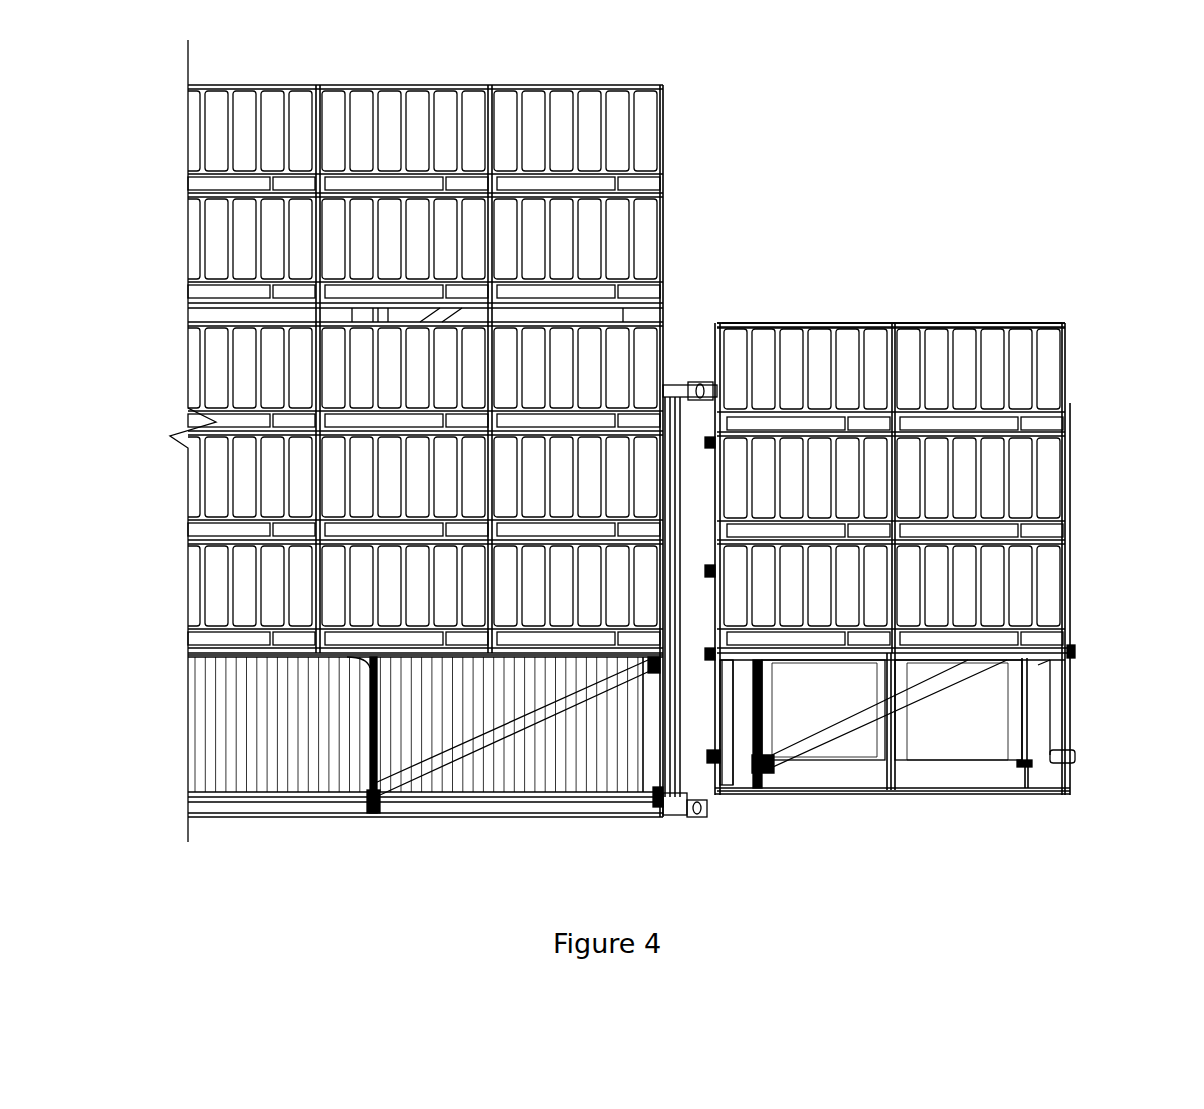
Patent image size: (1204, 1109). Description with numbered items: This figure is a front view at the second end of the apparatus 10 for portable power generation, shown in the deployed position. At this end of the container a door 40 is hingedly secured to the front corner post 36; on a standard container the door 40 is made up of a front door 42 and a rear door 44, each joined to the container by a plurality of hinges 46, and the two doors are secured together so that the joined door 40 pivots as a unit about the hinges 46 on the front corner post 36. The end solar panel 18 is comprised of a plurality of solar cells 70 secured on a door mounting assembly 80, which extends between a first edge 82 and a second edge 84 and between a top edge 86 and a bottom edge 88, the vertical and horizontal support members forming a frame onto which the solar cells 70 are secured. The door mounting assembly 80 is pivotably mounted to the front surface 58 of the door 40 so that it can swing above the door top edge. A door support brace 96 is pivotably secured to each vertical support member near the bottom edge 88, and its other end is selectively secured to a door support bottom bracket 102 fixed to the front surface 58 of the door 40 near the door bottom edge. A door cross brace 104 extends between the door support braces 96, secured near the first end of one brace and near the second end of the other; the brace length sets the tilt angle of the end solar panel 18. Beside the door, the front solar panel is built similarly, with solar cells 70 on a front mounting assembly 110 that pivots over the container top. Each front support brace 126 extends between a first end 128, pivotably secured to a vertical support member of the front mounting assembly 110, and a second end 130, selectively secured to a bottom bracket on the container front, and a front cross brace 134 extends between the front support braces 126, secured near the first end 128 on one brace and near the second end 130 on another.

The apparatus for portable power generation 10 is at (985, 133).
The end solar panel 18 is at (897, 325).
The front corner post 36 is at (693, 428).
The door 40 is at (953, 773).
The front door 42 is at (817, 772).
The rear door 44 is at (910, 773).
The hinges 46 is at (700, 652).
The front surface 58 is at (998, 738).
The solar cells 70 is at (626, 330).
The door mounting assembly 80 is at (1070, 640).
The first edge 82 is at (710, 350).
The second edge 84 is at (1074, 362).
The top edge 86 is at (1007, 322).
The bottom edge 88 is at (1041, 671).
The door support brace 96 is at (757, 728).
The door support bottom bracket 102 is at (772, 782).
The door cross brace 104 is at (885, 792).
The front mounting assembly 110 is at (463, 657).
The front support brace 126 is at (380, 727).
The first end 128 is at (658, 795).
The second end 130 is at (373, 824).
The front cross brace 134 is at (515, 727).